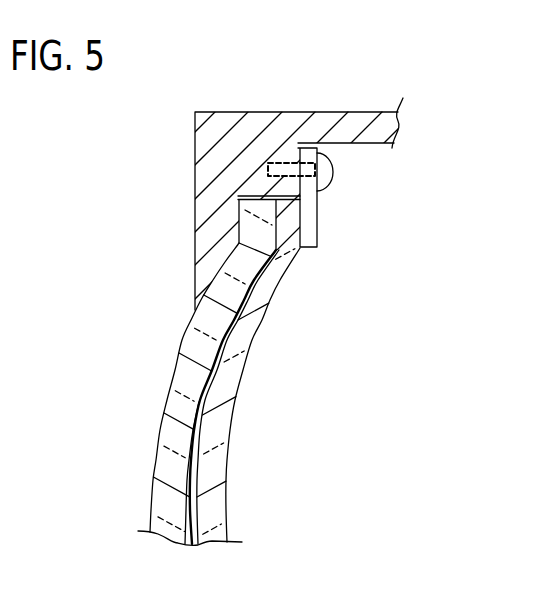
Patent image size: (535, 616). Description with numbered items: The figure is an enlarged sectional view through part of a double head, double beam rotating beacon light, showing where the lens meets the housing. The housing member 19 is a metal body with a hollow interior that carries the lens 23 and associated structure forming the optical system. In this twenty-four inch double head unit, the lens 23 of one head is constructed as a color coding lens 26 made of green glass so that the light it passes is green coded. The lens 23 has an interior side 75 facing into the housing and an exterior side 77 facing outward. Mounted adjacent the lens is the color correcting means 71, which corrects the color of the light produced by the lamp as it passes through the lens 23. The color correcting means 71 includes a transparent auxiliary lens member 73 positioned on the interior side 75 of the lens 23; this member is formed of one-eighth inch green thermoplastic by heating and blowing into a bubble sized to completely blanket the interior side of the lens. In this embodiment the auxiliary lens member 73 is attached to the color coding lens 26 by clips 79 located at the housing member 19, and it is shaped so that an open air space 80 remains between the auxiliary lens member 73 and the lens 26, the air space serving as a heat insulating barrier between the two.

The housing member 19 is at (373, 117).
The clips 79 is at (318, 231).
The color coding lens 26 is at (151, 494).
The lens 23 is at (170, 440).
The open air space 80 is at (178, 396).
The color correcting means 71 is at (229, 382).
The auxiliary lens member 73 is at (222, 459).
The interior side 75 is at (193, 517).
The exterior side 77 is at (151, 527).